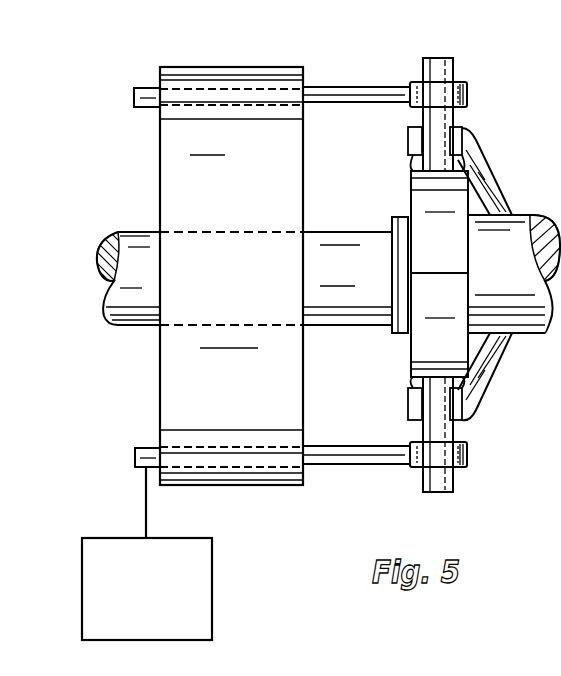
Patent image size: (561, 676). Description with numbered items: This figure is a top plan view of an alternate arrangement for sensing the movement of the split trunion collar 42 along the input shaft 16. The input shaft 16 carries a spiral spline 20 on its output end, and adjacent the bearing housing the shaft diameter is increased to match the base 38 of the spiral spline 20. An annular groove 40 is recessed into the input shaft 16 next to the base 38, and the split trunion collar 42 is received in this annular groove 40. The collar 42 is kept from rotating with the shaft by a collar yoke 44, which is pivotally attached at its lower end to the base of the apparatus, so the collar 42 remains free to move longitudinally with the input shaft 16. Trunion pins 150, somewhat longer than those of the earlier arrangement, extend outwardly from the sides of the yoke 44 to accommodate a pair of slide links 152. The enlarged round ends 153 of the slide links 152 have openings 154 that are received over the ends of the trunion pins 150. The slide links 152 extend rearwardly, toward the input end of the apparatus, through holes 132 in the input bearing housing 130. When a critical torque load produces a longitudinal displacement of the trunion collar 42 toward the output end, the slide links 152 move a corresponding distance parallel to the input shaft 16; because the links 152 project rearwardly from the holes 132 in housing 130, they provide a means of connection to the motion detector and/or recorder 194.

The input shaft 16 is at (130, 293).
The spiral spline 20 is at (530, 297).
The base of the spiral spline 38 is at (394, 330).
The annular groove 40 is at (412, 206).
The split trunion collar 42 is at (430, 338).
The collar yoke 44 is at (498, 202).
The input bearing housing 130 is at (186, 195).
The holes 132 is at (293, 90).
The trunion pins 150 is at (438, 75).
The slide links 152 is at (145, 95).
The enlarged round ends 153 is at (470, 92).
The openings 154 is at (461, 84).
The detector/recorder 194 is at (212, 571).